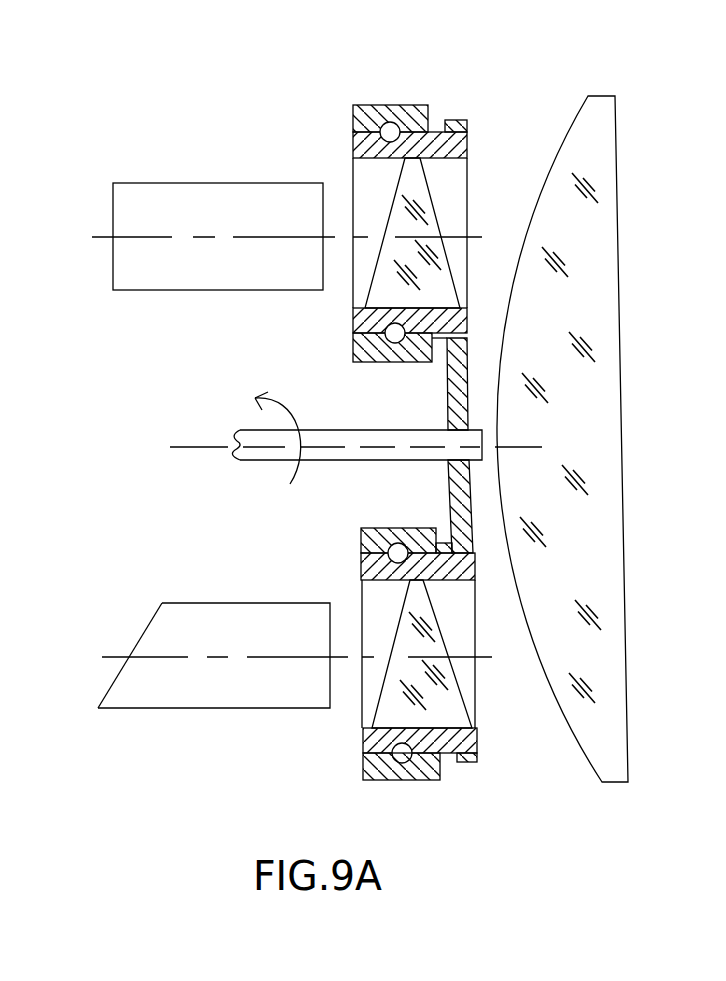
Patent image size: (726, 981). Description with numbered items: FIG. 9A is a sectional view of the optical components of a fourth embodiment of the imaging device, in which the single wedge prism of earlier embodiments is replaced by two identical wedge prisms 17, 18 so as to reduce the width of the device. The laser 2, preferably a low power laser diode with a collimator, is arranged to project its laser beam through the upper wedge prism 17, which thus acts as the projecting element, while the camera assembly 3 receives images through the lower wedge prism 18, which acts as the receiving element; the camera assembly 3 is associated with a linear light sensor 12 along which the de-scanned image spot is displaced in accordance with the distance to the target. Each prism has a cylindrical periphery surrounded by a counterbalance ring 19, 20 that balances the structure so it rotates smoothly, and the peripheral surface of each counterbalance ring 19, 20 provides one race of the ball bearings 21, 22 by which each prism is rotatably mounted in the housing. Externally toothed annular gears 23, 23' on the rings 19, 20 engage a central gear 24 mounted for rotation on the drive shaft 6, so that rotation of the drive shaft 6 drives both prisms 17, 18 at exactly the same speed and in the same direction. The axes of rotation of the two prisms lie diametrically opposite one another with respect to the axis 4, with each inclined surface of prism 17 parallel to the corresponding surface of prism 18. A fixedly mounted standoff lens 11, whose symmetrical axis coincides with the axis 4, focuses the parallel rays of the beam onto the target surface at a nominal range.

The laser 2 is at (163, 187).
The camera assembly 3 is at (242, 612).
The axis 4 is at (188, 442).
The drive shaft 6 is at (360, 432).
The standoff lens 11 is at (607, 248).
The linear light sensor 12 is at (140, 641).
The wedge prism 17 is at (422, 188).
The wedge prism 18 is at (455, 705).
The counterbalance ring 19 is at (358, 149).
The counterbalance ring 20 is at (364, 746).
The ball bearing 21 is at (345, 128).
The ball bearing 22 is at (353, 763).
The externally toothed annular gear 23 is at (483, 101).
The externally toothed annular gear 23' is at (510, 792).
The central gear 24 is at (450, 488).